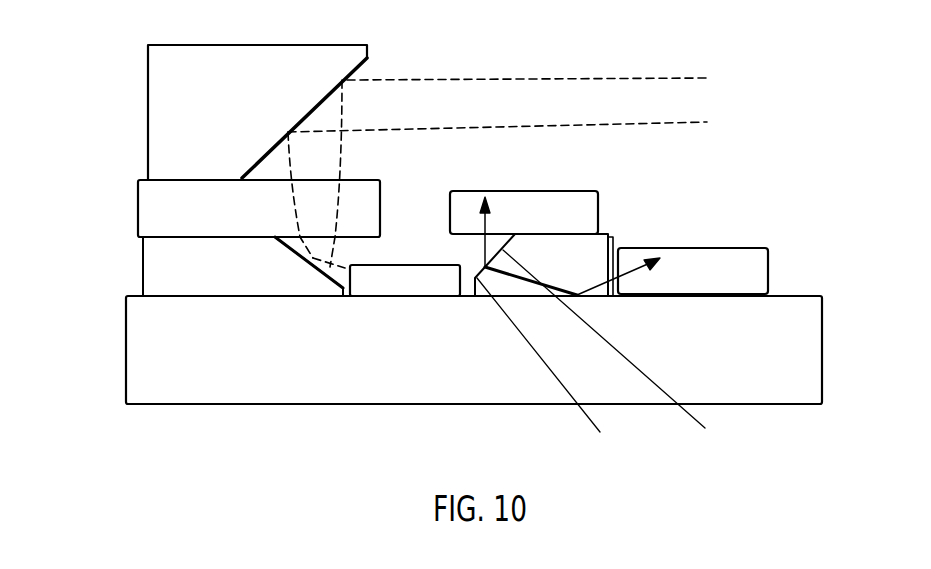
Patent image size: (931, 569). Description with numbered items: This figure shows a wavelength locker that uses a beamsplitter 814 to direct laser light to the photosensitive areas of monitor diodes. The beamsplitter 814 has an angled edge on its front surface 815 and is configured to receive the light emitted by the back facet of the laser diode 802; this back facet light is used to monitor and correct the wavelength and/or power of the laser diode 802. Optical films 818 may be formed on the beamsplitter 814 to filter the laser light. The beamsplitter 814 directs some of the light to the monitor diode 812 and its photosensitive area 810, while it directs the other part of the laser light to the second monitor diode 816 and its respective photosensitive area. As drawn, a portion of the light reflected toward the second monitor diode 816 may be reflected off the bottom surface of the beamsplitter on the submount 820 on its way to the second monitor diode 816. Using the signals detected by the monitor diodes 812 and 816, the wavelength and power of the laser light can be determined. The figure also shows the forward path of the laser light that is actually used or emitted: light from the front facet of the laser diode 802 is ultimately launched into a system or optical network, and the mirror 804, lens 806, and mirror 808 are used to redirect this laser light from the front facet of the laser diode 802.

The laser diode 802 is at (408, 283).
The mirror 804 is at (143, 262).
The lens 806 is at (138, 212).
The mirror 808 is at (148, 126).
The photosensitive area 810 is at (522, 190).
The monitor diode 812 is at (600, 211).
The beamsplitter 814 is at (612, 243).
The front surface 815 is at (600, 432).
The monitor diode 816 is at (768, 272).
The optical films 818 is at (705, 428).
The submount 820 is at (267, 406).